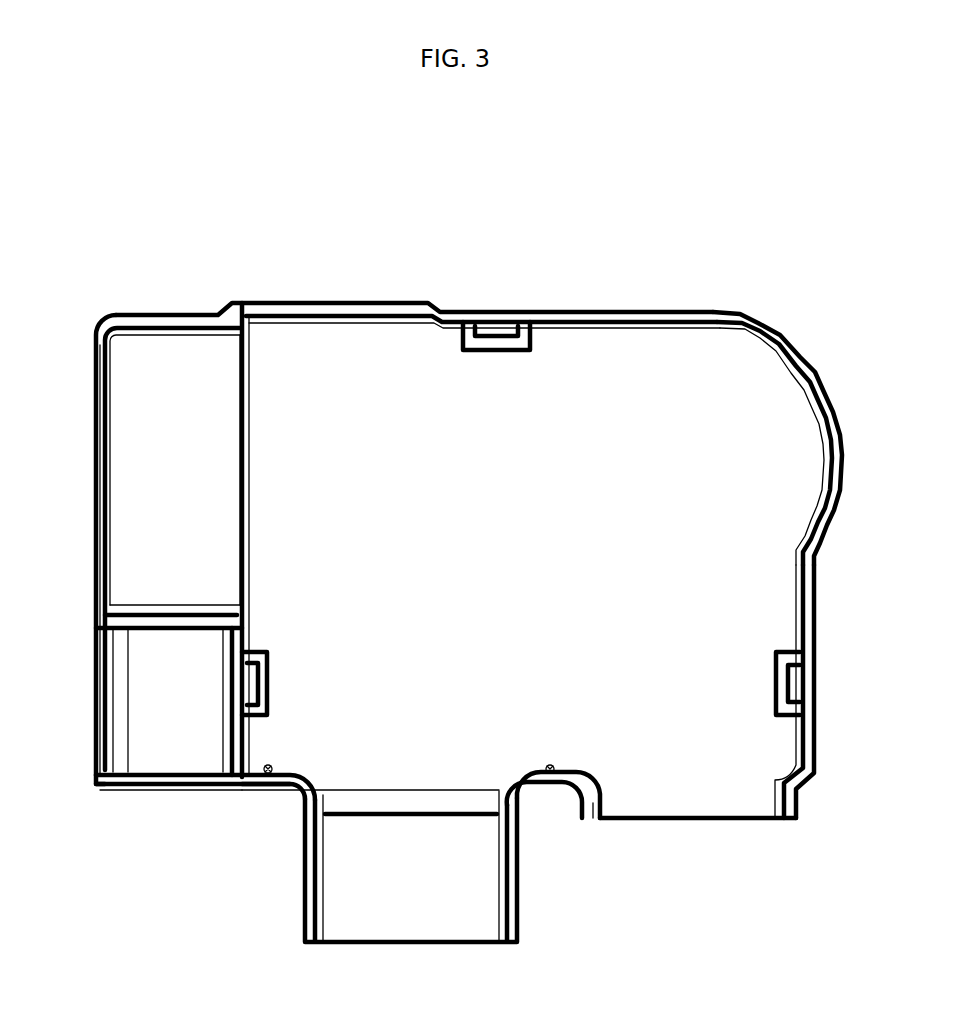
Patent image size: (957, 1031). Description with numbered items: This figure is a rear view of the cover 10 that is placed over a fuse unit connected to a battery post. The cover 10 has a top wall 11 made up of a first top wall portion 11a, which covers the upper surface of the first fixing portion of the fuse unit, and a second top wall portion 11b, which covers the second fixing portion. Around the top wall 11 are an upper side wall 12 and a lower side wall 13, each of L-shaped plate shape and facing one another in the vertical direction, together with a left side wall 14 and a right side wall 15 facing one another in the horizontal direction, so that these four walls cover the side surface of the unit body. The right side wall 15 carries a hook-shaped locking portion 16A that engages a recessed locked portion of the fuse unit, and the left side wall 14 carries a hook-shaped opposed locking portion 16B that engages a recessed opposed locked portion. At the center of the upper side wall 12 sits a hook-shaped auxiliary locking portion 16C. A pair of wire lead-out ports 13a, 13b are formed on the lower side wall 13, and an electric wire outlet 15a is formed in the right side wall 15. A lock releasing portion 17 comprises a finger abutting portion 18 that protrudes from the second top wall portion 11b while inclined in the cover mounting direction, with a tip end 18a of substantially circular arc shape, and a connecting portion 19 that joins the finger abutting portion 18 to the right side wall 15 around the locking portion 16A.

The cover 10 is at (462, 249).
The top wall 11 is at (714, 365).
The first top wall portion 11a is at (120, 412).
The second top wall portion 11b is at (803, 440).
The upper side wall 12 is at (614, 309).
The lower side wall 13 is at (545, 796).
The wire lead-out port 13a is at (430, 945).
The wire lead-out port 13b is at (688, 820).
The left side wall 14 is at (815, 610).
The right side wall 15 is at (225, 748).
The electric wire outlet 15a is at (100, 470).
The locking portion 16A is at (245, 692).
The opposed locking portion 16B is at (790, 690).
The auxiliary locking portion 16C is at (508, 322).
The lock releasing portion 17 is at (94, 780).
The finger abutting portion 18 is at (163, 772).
The tip end 18a is at (95, 640).
The connecting portion 19 is at (150, 625).